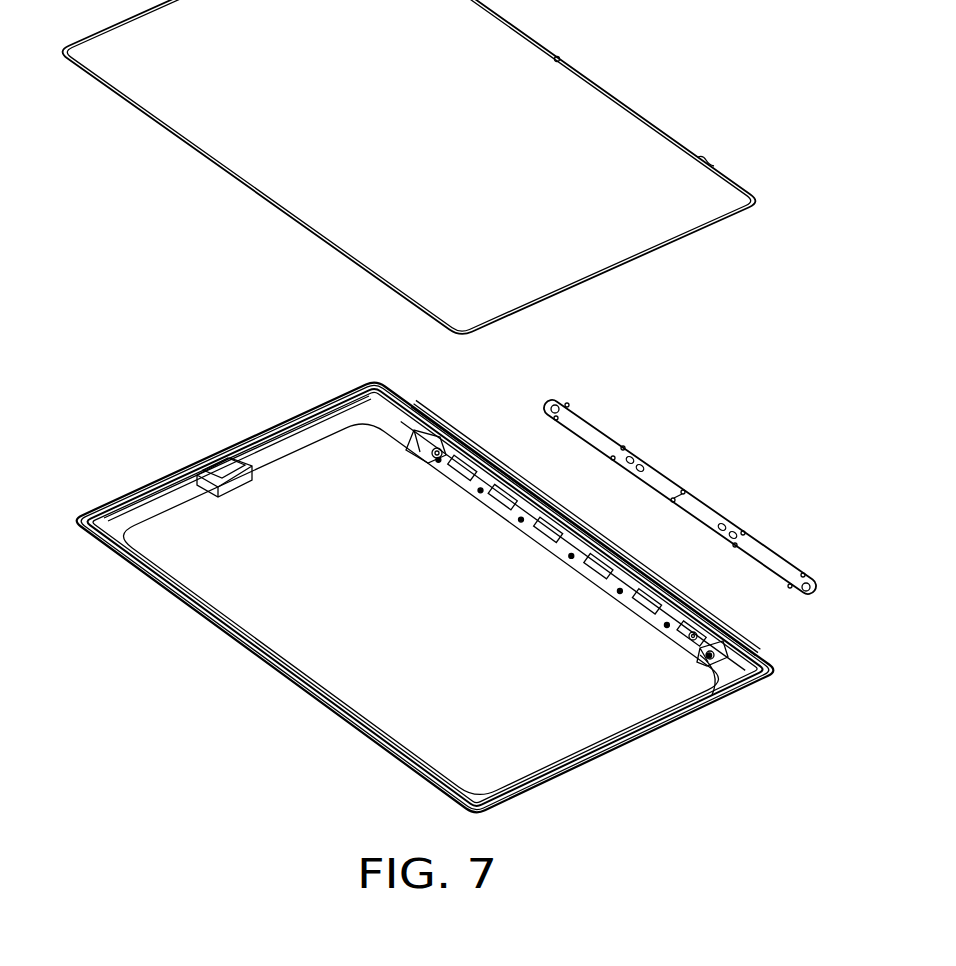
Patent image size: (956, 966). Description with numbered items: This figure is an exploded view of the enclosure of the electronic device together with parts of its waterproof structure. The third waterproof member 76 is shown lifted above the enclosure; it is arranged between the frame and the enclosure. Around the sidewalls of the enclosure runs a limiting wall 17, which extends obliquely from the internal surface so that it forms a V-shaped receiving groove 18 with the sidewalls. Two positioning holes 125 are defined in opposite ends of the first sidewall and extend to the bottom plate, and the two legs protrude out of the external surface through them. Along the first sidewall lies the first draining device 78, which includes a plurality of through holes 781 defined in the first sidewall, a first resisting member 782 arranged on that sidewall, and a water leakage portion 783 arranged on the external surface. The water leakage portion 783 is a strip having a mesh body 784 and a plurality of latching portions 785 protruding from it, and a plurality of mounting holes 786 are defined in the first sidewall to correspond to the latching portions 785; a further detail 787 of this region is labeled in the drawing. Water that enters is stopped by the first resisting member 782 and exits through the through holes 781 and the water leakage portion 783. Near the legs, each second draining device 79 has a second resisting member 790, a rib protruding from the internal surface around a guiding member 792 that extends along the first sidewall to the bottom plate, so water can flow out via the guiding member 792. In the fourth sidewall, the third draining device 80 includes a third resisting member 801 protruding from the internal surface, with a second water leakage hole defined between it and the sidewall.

The third waterproof member 76 is at (587, 73).
The first draining device 78 is at (680, 453).
The through holes 781 is at (480, 450).
The first resisting member 782 is at (492, 468).
The water leakage portion 783 is at (648, 383).
The mesh body 784 is at (593, 433).
The latching portions 785 is at (567, 405).
The mounting holes 786 is at (542, 488).
The guide slot 787 is at (610, 557).
The second draining device 79 is at (395, 420).
The second resisting member 790 is at (745, 642).
The guiding member 792 is at (712, 626).
The third draining device 80 is at (194, 463).
The third resisting member 801 is at (230, 470).
The limiting wall 17 is at (327, 405).
The V-shaped receiving groove 18 is at (290, 420).
The positioning holes 125 is at (760, 686).